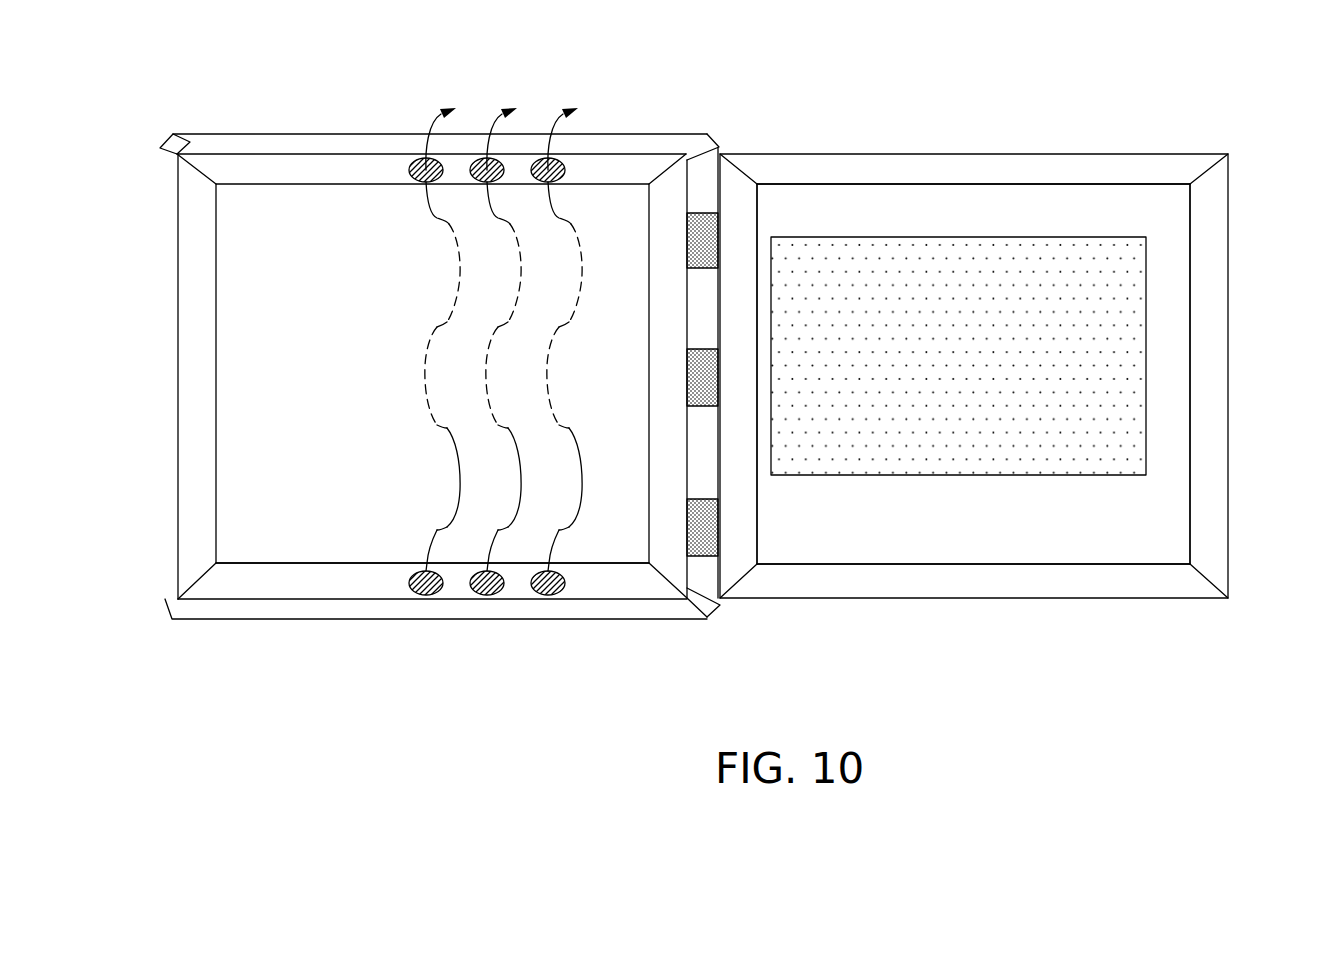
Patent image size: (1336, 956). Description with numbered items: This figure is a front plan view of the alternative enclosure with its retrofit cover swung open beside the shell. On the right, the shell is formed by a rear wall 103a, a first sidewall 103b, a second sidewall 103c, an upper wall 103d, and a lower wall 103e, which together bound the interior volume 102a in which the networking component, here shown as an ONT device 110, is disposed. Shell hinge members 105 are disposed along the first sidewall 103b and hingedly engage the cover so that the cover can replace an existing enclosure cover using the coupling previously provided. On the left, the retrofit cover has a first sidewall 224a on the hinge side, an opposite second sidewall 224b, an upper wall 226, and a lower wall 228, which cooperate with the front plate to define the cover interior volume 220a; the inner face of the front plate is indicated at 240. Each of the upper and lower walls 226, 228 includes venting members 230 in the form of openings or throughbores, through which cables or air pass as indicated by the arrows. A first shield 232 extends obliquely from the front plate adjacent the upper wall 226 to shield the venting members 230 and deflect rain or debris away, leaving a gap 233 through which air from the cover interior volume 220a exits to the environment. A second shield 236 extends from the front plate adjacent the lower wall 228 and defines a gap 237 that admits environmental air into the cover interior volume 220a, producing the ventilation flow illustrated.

The upper wall 226 is at (248, 165).
The gap 233 is at (330, 148).
The first shield 232 is at (190, 142).
The second sidewall 224b is at (197, 457).
The gap 237 is at (190, 611).
The second shield 236 is at (190, 622).
The cover interior volume 220a is at (236, 540).
The lid inner surface 240 is at (319, 539).
The lower wall 228 is at (397, 593).
The venting member 230 is at (548, 595).
The shell hinge member 105 is at (700, 217).
The upper wall 103d is at (1105, 205).
The second sidewall 103c is at (1205, 270).
The lower wall 103e is at (1130, 585).
The first sidewall 103b is at (740, 513).
The rear wall 103a is at (913, 513).
The optical network terminal 110 is at (1088, 380).
The interior volume 102a is at (1172, 336).
The first sidewall 224a is at (665, 512).